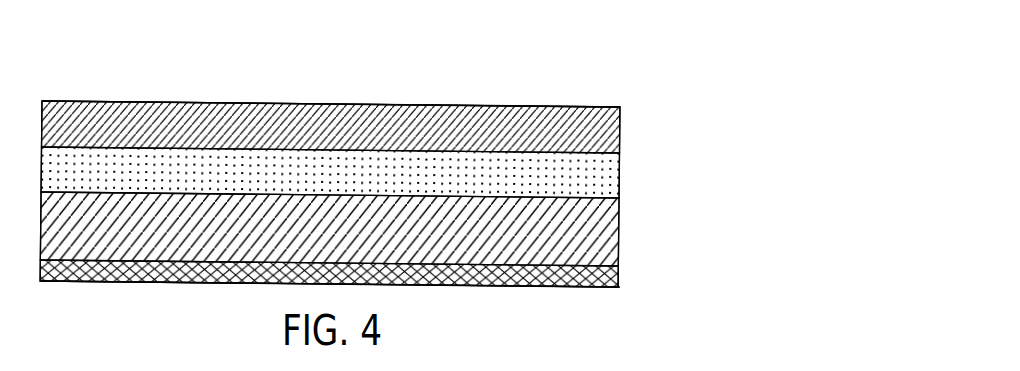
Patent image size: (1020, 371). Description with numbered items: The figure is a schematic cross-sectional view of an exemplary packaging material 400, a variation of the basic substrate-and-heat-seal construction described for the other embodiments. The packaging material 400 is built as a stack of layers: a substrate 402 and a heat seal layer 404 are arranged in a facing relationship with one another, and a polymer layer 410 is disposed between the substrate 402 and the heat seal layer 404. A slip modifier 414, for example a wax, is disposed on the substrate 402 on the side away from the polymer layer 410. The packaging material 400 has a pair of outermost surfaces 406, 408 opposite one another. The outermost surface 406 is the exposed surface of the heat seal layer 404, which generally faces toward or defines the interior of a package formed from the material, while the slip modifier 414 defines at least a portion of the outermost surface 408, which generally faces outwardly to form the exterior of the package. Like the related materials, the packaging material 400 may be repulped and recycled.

The packaging material 400 is at (646, 57).
The substrate 402 is at (620, 228).
The heat seal layer 404 is at (620, 128).
The outermost surface 406 is at (397, 103).
The outermost surface 408 is at (178, 284).
The polymer layer 410 is at (620, 172).
The slip modifier 414 is at (620, 272).